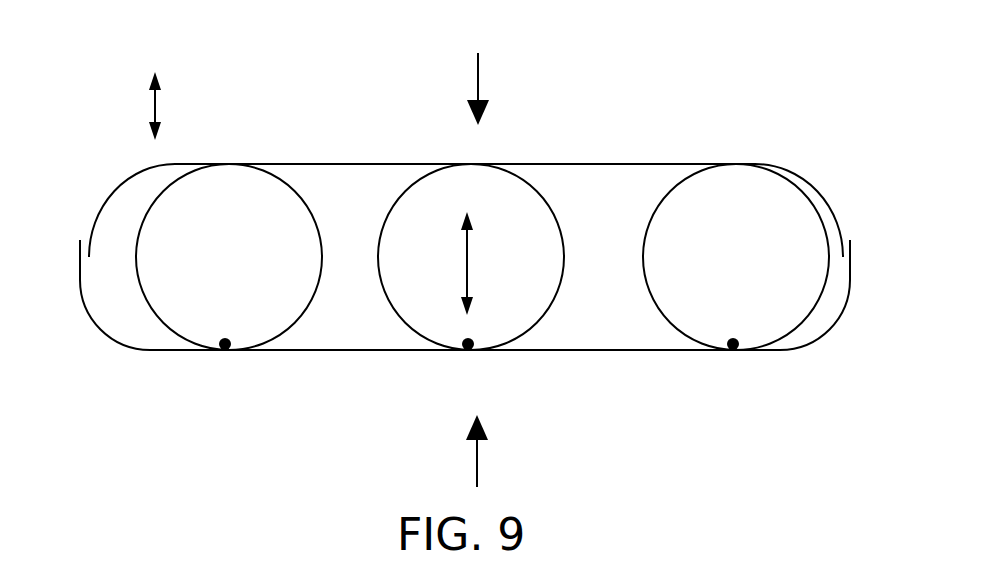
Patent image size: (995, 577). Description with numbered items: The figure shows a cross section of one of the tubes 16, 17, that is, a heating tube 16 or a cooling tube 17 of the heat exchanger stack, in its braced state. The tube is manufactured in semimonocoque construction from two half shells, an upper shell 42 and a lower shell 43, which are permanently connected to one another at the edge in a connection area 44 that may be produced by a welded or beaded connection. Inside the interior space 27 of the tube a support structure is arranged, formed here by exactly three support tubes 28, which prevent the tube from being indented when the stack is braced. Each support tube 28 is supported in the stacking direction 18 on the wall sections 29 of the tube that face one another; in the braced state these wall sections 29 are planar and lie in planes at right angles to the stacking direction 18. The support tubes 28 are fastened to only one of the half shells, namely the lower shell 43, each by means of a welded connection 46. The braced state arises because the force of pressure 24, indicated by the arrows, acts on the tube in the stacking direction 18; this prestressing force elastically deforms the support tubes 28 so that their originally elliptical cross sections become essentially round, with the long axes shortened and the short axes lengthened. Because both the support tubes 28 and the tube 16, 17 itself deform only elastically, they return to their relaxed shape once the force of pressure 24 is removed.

The heating tube 16 is at (657, 93).
The cooling tube 17 is at (657, 93).
The stacking direction 18 is at (157, 112).
The force of pressure 24 is at (478, 80).
The interior space 27 is at (626, 254).
The support tube 28 is at (138, 278).
The wall section 29 is at (345, 164).
The upper shell 42 is at (688, 148).
The lower shell 43 is at (623, 366).
The connection area 44 is at (80, 240).
The welded connection 46 is at (226, 349).